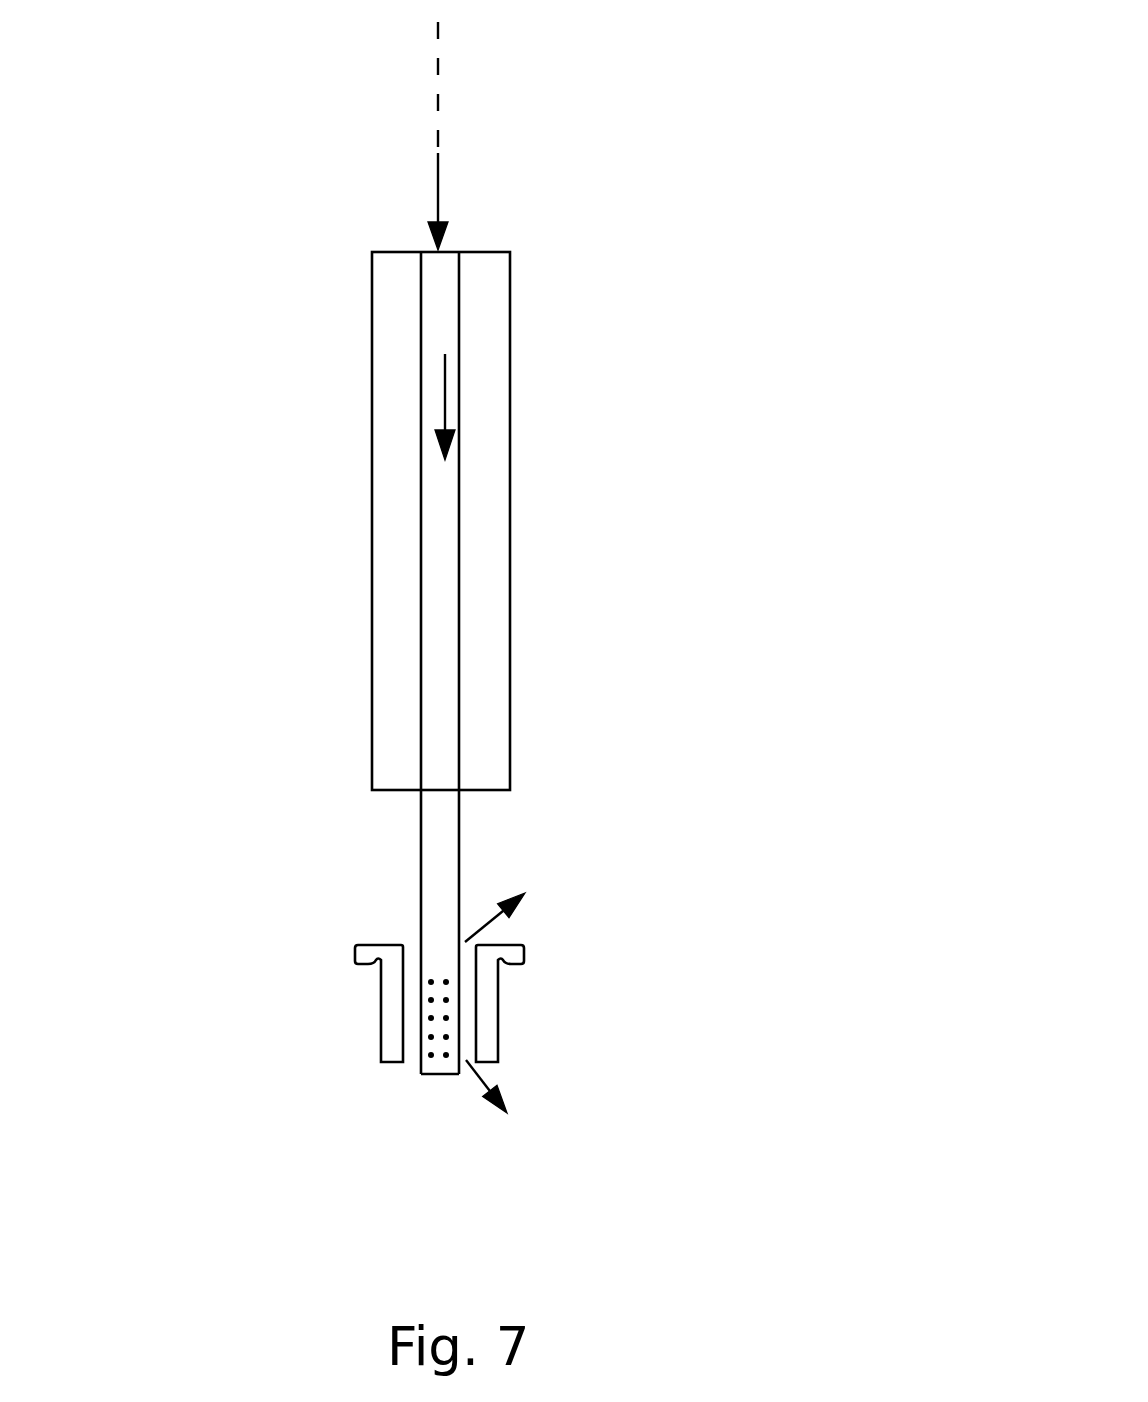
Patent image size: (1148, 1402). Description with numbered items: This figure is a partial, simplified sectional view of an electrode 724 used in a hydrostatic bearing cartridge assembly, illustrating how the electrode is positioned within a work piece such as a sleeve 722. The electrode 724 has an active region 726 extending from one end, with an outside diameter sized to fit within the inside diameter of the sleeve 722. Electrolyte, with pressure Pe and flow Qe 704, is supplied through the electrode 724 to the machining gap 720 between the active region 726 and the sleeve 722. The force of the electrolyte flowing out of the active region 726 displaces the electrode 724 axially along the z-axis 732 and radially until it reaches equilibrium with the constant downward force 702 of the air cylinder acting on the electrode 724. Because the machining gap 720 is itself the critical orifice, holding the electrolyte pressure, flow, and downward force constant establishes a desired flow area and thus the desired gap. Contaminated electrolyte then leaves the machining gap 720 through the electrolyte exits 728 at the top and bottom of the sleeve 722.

The downward force 702 is at (438, 153).
The flow of the electrolyte 704 is at (445, 354).
The machining gap 720 is at (445, 1143).
The sleeve 722 is at (388, 1016).
The electrode 724 is at (540, 488).
The active region 726 is at (433, 952).
The electrolyte exit 728 is at (614, 1005).
The z-axis 732 is at (440, 72).